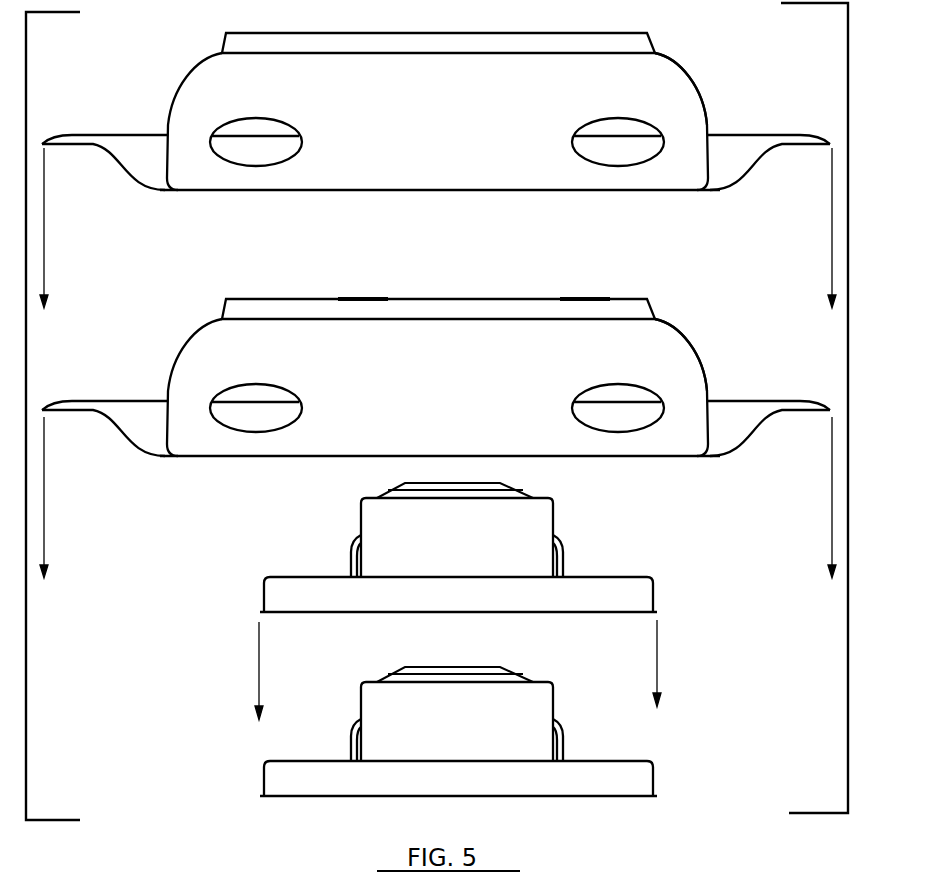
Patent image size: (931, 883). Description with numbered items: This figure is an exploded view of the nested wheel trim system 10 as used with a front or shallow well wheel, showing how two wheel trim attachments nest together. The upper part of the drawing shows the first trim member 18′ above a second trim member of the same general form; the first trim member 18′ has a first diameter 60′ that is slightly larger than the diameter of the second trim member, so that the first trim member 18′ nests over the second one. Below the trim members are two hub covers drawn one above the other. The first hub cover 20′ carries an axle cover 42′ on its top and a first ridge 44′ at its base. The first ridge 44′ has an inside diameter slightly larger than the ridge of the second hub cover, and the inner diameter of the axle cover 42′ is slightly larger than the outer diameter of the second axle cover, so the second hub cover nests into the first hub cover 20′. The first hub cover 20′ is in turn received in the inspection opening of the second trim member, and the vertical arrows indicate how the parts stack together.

The nested wheel trim system 10 is at (146, 94).
The first trim member 18′ is at (705, 96).
The first diameter 60′ is at (683, 68).
The axle cover 42′ is at (553, 500).
The first hub cover 20′ is at (553, 530).
The first ridge 44′ is at (653, 577).